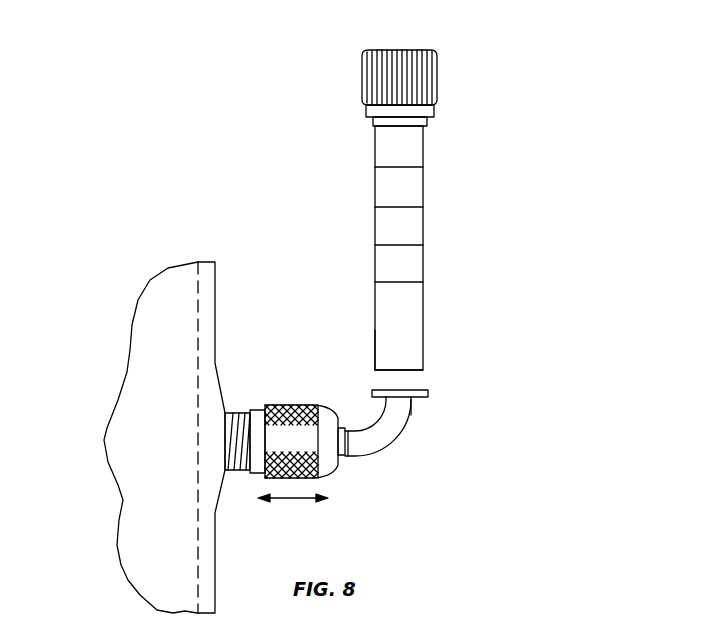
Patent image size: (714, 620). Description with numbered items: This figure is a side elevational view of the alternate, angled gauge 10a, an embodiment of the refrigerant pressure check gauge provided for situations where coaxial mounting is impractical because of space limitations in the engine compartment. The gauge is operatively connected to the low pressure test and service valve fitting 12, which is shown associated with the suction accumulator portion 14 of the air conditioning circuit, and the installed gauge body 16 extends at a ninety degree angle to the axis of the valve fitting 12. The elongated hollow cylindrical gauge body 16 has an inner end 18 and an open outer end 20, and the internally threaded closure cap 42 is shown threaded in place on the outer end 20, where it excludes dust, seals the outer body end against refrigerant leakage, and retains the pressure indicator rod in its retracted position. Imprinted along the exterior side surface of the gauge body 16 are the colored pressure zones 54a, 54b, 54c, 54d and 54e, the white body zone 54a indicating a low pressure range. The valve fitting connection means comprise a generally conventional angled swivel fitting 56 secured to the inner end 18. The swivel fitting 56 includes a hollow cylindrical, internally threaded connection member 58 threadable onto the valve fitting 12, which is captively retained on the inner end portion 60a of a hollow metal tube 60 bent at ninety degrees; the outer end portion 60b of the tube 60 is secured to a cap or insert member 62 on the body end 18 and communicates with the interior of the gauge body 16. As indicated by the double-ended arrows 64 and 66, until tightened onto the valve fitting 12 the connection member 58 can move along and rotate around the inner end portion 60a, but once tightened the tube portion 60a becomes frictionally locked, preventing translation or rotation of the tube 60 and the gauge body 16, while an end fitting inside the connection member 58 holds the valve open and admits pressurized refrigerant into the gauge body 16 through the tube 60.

The angled gauge 10a is at (508, 308).
The test and service valve fitting 12 is at (240, 413).
The suction accumulator portion 14 is at (222, 314).
The gauge body 16 is at (362, 212).
The inner end 18 is at (424, 380).
The outer end 20 is at (428, 120).
The closure cap 42 is at (411, 50).
The white body zone 54a is at (418, 145).
The colored body zone 54b is at (418, 188).
The colored body zone 54c is at (418, 225).
The colored body zone 54d is at (418, 267).
The colored body zone 54e is at (418, 337).
The angled swivel fitting 56 is at (316, 384).
The connection member 58 is at (283, 405).
The tube 60 is at (403, 452).
The inner end portion 60a is at (348, 458).
The outer end portion 60b is at (412, 410).
The cap or insert member 62 is at (428, 394).
The double-ended arrow 64 is at (288, 500).
The double-ended arrow 66 is at (356, 461).